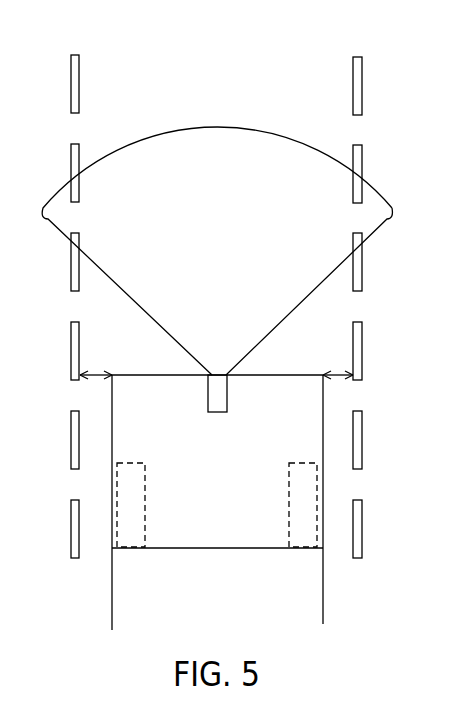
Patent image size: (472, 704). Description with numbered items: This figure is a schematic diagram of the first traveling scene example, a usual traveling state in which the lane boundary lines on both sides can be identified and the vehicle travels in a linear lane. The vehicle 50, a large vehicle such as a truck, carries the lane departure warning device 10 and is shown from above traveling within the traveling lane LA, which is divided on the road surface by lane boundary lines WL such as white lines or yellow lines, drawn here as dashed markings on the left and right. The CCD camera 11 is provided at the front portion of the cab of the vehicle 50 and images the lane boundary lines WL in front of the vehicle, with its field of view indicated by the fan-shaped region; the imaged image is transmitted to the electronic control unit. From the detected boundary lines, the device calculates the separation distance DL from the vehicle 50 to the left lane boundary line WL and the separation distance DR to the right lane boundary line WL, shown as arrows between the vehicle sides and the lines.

The lane departure warning device 10 is at (213, 369).
The CCD camera 11 is at (228, 397).
The vehicle 50 is at (233, 592).
The lane boundary lines WL is at (74, 54).
The traveling lane LA is at (222, 22).
The separation distance to left lane boundary line DL is at (91, 371).
The separation distance to right lane boundary line DR is at (335, 371).